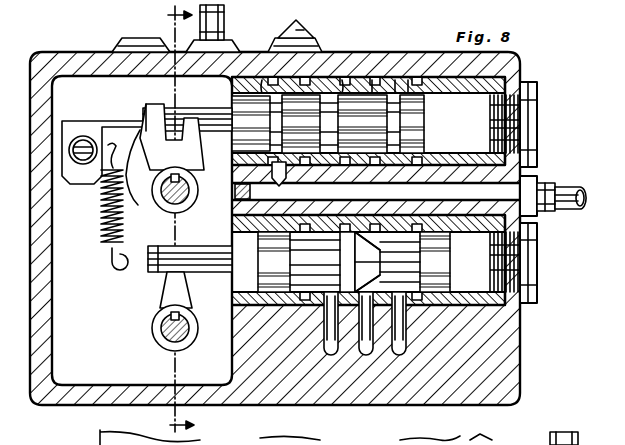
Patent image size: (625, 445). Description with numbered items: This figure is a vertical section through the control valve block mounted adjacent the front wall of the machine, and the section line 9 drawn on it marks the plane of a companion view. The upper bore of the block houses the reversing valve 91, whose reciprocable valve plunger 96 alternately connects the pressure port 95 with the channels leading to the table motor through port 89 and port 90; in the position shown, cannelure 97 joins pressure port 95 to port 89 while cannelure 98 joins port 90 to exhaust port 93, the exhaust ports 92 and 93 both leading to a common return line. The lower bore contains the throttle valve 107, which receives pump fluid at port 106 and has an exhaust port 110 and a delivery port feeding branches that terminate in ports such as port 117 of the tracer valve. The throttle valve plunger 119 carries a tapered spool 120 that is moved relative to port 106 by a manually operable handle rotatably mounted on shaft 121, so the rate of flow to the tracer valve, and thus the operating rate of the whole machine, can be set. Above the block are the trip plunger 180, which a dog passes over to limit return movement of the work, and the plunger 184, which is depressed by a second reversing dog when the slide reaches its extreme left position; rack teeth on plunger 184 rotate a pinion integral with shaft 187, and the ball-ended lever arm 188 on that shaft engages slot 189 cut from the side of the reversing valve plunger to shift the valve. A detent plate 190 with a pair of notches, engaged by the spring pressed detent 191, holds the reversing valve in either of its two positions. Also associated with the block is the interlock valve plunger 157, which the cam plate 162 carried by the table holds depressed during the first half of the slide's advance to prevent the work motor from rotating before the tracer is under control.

The section line 9 is at (180, 219).
The port 89 is at (395, 80).
The port 90 is at (268, 60).
The reversing valve 91 is at (512, 68).
The exhaust port 92 is at (430, 80).
The exhaust port 93 is at (262, 80).
The pressure port 95 is at (372, 80).
The reciprocable valve plunger 96 is at (236, 110).
The cannelure 97 is at (408, 80).
The cannelure 98 is at (343, 80).
The port 106 is at (368, 350).
The throttle valve 107 is at (518, 312).
The exhaust port 110 is at (325, 305).
The port 117 is at (448, 290).
The throttle valve plunger 119 is at (216, 272).
The tapered spool 120 is at (364, 240).
The shaft 121 is at (161, 328).
The plunger 157 is at (304, 32).
The cam plate 162 is at (98, 438).
The trip plunger 180 is at (146, 38).
The plunger 184 is at (226, 20).
The shaft 187 is at (198, 202).
The ball-ended lever arm 188 is at (136, 128).
The slot 189 is at (165, 96).
The detent plate 190 is at (128, 205).
The spring pressed detent 191 is at (76, 121).